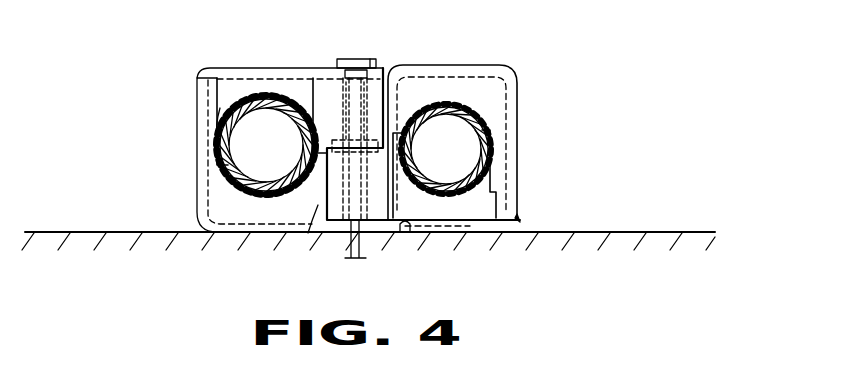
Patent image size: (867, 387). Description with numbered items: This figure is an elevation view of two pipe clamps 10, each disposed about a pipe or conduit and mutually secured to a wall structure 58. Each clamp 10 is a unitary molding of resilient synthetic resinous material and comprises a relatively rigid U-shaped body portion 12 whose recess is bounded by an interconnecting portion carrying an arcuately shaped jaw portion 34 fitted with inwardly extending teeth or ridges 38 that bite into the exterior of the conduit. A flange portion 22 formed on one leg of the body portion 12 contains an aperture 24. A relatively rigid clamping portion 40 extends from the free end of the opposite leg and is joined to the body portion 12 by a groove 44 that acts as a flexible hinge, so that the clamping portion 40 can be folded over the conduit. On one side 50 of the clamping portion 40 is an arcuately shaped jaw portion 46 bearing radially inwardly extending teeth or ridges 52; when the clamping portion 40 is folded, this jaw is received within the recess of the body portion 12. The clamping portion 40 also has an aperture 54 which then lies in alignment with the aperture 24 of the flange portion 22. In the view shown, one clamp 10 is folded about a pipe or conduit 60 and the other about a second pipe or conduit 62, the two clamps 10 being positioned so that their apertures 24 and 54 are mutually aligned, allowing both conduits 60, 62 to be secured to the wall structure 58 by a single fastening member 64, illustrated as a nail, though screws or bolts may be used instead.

The clamp 10 is at (218, 62).
The body portion 12 is at (237, 210).
The flange portion 22 is at (381, 122).
The aperture 24 is at (363, 100).
The jaw portion 34 is at (231, 190).
The teeth or ridges 38 is at (278, 163).
The clamping portion 40 is at (222, 68).
The groove 44 is at (196, 80).
The jaw portion 46 is at (243, 88).
The one side 50 is at (315, 88).
The teeth or ridges 52 is at (278, 104).
The aperture 54 is at (380, 66).
The wall structure 58 is at (551, 232).
The pipe or conduit 60 is at (490, 140).
The second pipe or conduit 62 is at (225, 114).
The fastening member 64 is at (351, 58).